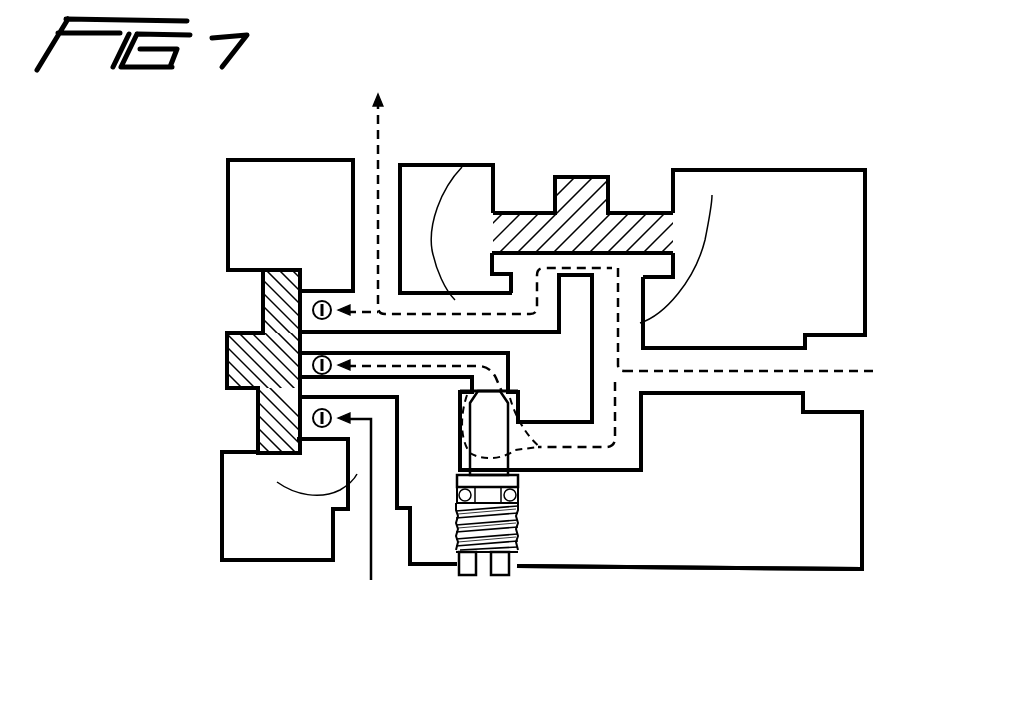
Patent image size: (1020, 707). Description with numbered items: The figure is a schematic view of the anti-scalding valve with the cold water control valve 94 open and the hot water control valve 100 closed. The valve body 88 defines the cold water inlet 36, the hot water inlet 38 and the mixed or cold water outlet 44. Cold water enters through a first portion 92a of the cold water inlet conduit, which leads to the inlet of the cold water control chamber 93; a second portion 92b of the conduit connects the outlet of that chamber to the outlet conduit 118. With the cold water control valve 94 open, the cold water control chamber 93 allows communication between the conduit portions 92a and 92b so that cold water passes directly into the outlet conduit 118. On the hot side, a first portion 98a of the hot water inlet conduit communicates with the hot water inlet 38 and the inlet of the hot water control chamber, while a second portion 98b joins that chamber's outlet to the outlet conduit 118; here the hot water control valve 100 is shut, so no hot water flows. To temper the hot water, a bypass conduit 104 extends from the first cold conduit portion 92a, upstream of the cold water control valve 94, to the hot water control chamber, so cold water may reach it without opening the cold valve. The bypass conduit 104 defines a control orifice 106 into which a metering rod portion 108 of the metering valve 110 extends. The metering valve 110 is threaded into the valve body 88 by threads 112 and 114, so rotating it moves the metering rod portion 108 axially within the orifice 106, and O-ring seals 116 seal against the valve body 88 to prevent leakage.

The cold water inlet 36 is at (855, 348).
The hot water inlet 38 is at (338, 553).
The mixed or cold water outlet 44 is at (356, 168).
The valve body 88 is at (853, 202).
The first portion of cold water inlet conduit 92a is at (705, 367).
The second portion of cold water inlet conduit 92b is at (522, 280).
The cold water control chamber 93 is at (656, 263).
The cold water control valve 94 is at (592, 190).
The first portion of hot water inlet conduit 98a is at (333, 425).
The second portion of hot water inlet conduit 98b is at (339, 297).
The hot water control valve 100 is at (235, 368).
The bypass conduit 104 is at (380, 376).
The control orifice 106 is at (518, 402).
The metering rod portion 108 is at (463, 472).
The metering valve 110 is at (500, 577).
The threads 112 is at (456, 524).
The threads 114 is at (517, 517).
The O-ring seals 116 is at (518, 493).
The outlet conduit 118 is at (367, 200).